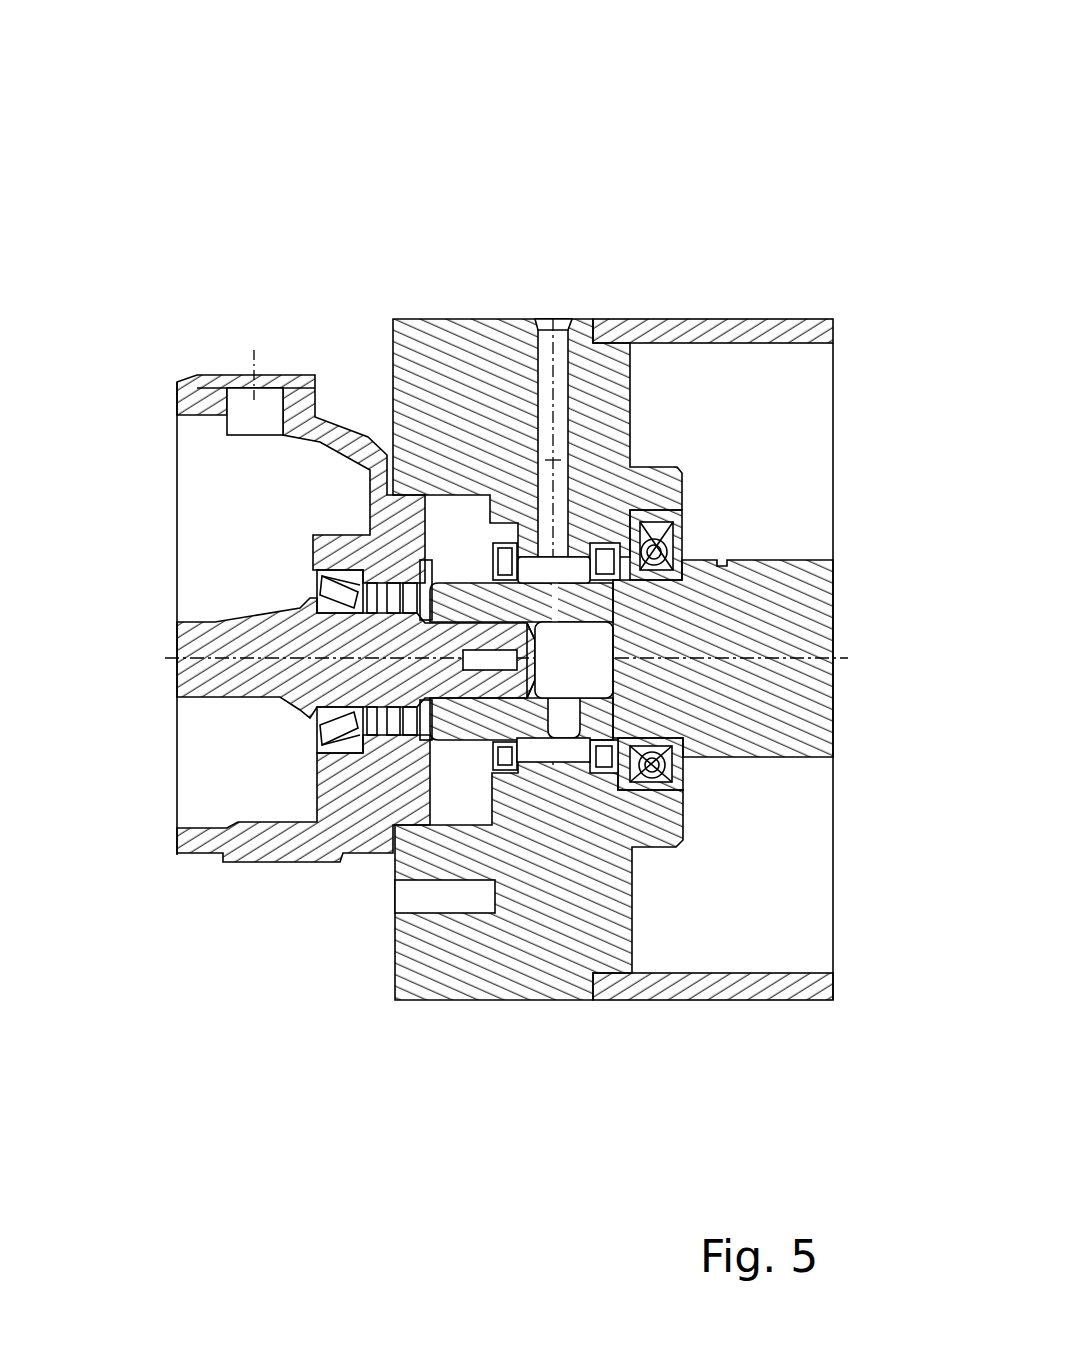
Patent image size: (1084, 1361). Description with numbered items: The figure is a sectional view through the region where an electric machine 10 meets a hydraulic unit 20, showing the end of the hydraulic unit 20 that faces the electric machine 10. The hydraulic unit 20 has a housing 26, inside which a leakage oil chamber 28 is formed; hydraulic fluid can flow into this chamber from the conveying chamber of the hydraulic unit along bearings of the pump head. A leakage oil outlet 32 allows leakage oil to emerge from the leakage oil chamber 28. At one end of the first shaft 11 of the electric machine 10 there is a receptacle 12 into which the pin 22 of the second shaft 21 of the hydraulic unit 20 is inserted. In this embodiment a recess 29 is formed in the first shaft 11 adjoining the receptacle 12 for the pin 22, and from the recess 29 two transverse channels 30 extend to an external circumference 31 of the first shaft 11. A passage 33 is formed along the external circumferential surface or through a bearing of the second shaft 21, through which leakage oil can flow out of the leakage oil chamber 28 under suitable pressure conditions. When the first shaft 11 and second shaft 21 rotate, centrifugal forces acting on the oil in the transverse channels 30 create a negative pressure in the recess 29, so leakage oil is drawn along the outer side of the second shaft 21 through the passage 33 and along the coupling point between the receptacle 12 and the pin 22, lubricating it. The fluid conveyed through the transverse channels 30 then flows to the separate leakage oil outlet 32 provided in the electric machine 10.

The electric machine 10 is at (732, 172).
The first shaft 11 is at (790, 661).
The receptacle 12 is at (498, 692).
The hydraulic unit 20 is at (243, 205).
The second shaft 21 is at (215, 665).
The pin 22 is at (515, 683).
The housing 26 is at (225, 825).
The leakage oil chamber 28 is at (245, 487).
The recess 29 is at (590, 672).
The transverse channels 30 is at (567, 602).
The external circumference 31 is at (567, 585).
The leakage oil outlet 32 is at (270, 393).
The passage 33 is at (363, 707).